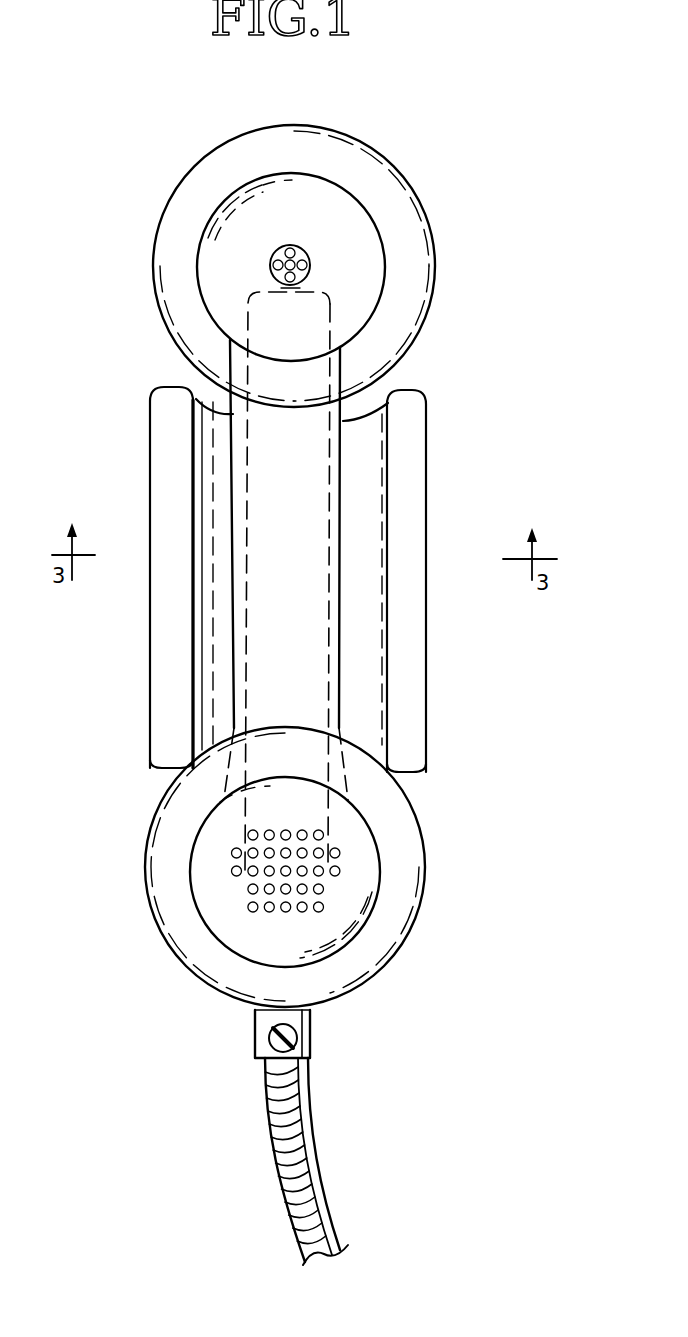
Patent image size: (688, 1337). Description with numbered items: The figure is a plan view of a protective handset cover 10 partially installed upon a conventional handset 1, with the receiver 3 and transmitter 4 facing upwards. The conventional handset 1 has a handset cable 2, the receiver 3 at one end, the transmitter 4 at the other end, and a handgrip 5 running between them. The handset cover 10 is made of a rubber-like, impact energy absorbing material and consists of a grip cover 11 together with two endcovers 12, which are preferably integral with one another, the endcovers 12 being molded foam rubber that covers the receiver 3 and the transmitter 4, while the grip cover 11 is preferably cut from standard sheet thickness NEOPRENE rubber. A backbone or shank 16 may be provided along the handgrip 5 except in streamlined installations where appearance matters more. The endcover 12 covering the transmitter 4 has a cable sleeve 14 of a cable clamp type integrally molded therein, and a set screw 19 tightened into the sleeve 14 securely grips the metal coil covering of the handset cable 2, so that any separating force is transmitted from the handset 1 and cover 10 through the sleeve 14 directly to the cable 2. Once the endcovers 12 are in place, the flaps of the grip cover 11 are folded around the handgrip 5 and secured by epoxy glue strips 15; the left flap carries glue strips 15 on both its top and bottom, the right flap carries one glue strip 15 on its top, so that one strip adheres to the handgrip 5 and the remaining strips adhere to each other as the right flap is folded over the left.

The conventional handset 1 is at (253, 222).
The handset cable 2 is at (268, 1116).
The receiver 3 is at (313, 193).
The transmitter 4 is at (353, 856).
The handgrip 5 is at (342, 488).
The handset cover 10 is at (437, 342).
The grip cover 11 is at (198, 399).
The endcover 12 is at (418, 198).
The cable sleeve 14 is at (255, 1022).
The glue strip 15 is at (172, 480).
The shank 16 is at (330, 650).
The set screw 19 is at (297, 1040).